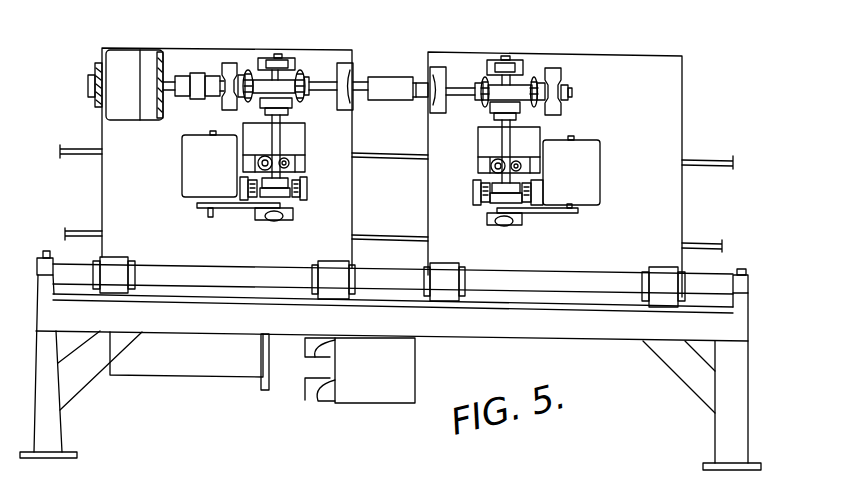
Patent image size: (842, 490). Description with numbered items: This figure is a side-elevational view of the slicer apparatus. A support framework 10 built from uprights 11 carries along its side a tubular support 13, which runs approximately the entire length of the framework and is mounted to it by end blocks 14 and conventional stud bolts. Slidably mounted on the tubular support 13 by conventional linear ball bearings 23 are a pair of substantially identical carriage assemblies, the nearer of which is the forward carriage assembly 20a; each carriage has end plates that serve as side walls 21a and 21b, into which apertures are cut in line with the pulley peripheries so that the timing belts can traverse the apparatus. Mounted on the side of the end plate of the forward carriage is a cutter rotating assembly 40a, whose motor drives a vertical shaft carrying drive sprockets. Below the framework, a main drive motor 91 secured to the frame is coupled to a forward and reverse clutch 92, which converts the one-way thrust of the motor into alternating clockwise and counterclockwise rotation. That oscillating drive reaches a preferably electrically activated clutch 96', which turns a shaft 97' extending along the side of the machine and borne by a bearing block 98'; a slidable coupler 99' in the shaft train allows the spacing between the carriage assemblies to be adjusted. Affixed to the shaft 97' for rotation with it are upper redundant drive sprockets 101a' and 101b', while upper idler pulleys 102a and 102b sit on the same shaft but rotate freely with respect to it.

The support framework 10 is at (752, 424).
The upright 11 is at (750, 379).
The tubular support 13 is at (702, 284).
The end block 14 is at (44, 256).
The forward carriage assembly 20a is at (214, 54).
The side wall 21a is at (101, 188).
The side wall 21b is at (427, 197).
The linear ball bearing 23 is at (116, 266).
The cutter rotating assembly 40a is at (314, 174).
The main drive motor 91 is at (384, 376).
The forward and reverse clutch 92 is at (205, 362).
The clutch 96' is at (156, 85).
The shaft 97' is at (580, 91).
The bearing block 98' is at (366, 64).
The slidable coupler 99' is at (398, 72).
The upper redundant drive sprocket 101a' is at (306, 58).
The upper redundant drive sprocket 101b' is at (481, 65).
The upper idler pulley 102a is at (248, 70).
The upper idler pulley 102b is at (536, 80).